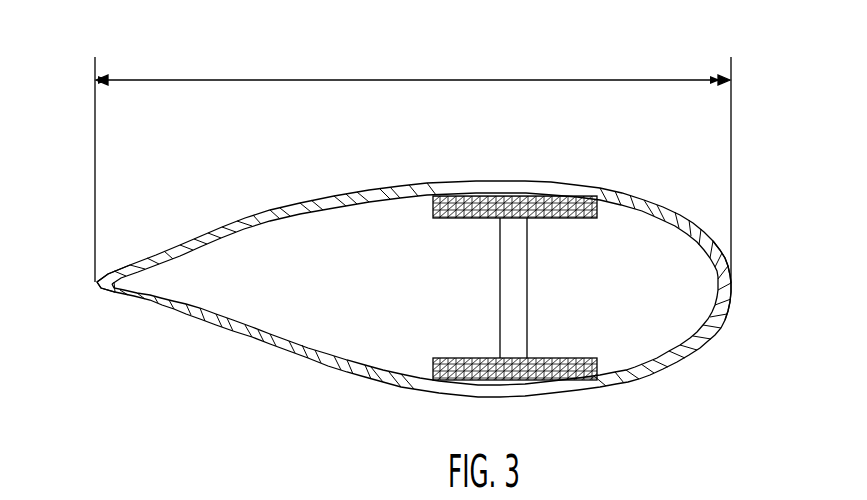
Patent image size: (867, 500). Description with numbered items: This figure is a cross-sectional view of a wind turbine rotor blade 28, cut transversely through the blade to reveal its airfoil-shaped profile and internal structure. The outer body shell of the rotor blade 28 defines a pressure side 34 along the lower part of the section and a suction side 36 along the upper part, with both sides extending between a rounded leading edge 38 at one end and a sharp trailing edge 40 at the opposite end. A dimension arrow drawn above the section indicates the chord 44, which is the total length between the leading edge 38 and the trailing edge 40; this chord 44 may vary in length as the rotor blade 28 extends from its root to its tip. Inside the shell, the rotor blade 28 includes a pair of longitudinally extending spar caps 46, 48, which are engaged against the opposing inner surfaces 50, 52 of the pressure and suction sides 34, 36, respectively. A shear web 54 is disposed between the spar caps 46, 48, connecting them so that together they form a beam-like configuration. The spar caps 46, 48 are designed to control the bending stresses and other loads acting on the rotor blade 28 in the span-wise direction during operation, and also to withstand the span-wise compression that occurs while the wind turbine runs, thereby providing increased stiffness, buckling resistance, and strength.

The rotor blade 28 is at (661, 31).
The pressure side 34 is at (347, 374).
The suction side 36 is at (318, 202).
The leading edge 38 is at (733, 285).
The trailing edge 40 is at (97, 284).
The chord 44 is at (316, 79).
The spar cap 46 is at (555, 388).
The spar cap 48 is at (553, 196).
The inner surface of the pressure side 50 is at (248, 320).
The inner surface of the suction side 52 is at (290, 225).
The shear web 54 is at (528, 331).